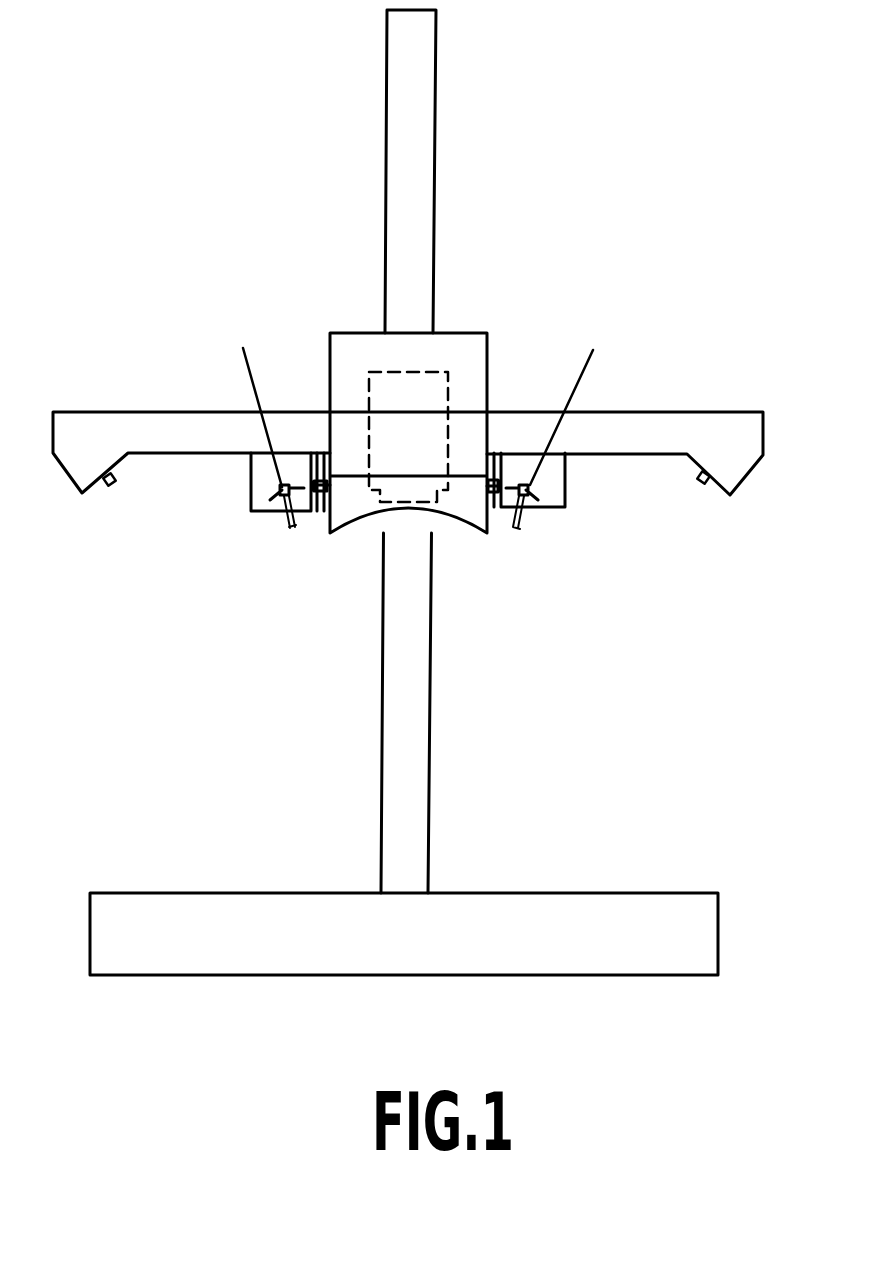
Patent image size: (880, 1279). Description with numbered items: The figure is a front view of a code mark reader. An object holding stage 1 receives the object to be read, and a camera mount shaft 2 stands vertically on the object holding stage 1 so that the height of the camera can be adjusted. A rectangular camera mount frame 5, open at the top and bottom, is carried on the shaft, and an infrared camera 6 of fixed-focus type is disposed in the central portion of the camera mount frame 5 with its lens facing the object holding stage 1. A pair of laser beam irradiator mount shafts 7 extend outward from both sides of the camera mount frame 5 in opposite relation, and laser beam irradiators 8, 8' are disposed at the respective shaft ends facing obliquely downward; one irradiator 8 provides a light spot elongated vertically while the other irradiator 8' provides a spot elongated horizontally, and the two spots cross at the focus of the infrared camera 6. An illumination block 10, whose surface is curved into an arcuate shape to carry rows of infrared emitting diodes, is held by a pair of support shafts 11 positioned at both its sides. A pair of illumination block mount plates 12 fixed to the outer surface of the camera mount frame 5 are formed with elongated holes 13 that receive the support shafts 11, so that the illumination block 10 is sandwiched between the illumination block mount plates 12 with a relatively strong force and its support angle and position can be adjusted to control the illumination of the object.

The object holding stage 1 is at (605, 933).
The camera mount shaft 2 is at (403, 80).
The camera mount frame 5 is at (467, 360).
The infrared camera 6 is at (375, 365).
The laser beam irradiator mount shafts 7 is at (625, 425).
The laser beam irradiator 8 is at (100, 544).
The laser beam irradiator 8' is at (744, 537).
The illumination block 10 is at (522, 508).
The support shafts 11 is at (418, 394).
The illumination block mount plates 12 is at (558, 482).
The elongated holes 13 is at (567, 507).